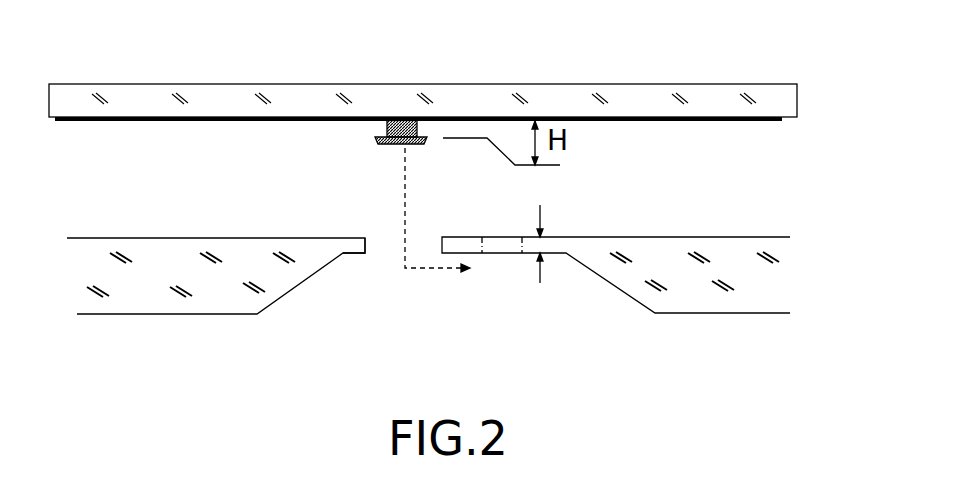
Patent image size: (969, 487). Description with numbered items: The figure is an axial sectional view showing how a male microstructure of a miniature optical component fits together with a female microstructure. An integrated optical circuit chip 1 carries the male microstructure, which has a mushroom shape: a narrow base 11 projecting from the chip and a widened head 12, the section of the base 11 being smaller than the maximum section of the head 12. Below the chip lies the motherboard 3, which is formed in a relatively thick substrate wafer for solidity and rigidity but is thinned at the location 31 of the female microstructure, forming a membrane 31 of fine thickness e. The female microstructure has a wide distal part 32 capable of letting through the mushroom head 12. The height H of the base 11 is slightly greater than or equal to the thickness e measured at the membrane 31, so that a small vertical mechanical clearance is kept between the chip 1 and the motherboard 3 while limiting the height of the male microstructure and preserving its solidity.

The integrated optical circuit chip 1 is at (137, 95).
The narrow base 11 is at (423, 118).
The widened head 12 is at (376, 141).
The motherboard 3 is at (150, 298).
The membrane 31 is at (352, 255).
The wide distal part 32 is at (386, 250).